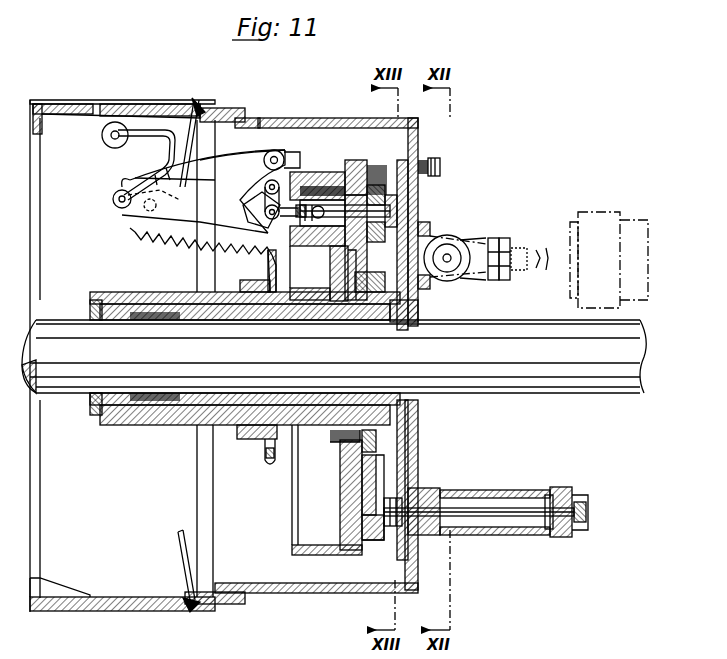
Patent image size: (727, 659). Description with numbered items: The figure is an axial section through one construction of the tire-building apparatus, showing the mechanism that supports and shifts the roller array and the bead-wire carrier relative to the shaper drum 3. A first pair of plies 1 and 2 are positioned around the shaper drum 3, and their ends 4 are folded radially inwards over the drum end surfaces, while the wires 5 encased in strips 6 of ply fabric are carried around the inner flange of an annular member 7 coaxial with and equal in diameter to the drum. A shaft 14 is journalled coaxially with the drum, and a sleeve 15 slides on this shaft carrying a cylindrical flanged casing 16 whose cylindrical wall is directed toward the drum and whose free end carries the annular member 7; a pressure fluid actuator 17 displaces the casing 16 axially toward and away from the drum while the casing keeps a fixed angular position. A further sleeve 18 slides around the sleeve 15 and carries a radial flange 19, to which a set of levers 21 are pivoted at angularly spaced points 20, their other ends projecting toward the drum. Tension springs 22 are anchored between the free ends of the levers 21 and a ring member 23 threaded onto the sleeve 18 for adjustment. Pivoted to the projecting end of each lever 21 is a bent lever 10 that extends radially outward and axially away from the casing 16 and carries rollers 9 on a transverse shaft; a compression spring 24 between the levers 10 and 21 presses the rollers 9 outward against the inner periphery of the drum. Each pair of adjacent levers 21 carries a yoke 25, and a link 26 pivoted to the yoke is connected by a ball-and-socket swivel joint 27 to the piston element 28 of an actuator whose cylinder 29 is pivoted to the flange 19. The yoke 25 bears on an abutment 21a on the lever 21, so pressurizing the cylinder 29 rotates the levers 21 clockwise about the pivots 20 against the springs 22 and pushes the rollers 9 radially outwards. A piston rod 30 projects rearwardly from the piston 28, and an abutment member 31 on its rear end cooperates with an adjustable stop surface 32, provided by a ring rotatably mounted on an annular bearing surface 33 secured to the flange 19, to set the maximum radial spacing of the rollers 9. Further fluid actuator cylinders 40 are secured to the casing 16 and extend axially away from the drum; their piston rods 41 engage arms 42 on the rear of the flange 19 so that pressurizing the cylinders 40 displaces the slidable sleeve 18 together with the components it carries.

The ply 1 is at (142, 100).
The ply 2 is at (165, 100).
The shaper drum 3 is at (115, 100).
The ply end 4 is at (200, 160).
The wire 5 is at (218, 108).
The strip of ply fabric 6 is at (196, 100).
The annular member 7 is at (245, 116).
The roller 9 is at (103, 140).
The bent lever 10 is at (172, 147).
The shaft 14 is at (60, 340).
The sleeve 15 is at (418, 306).
The cylindrical flanged casing 16 is at (410, 220).
The pressure fluid actuator 17 is at (606, 218).
The further sleeve 18 is at (302, 292).
The radial flange 19 is at (358, 160).
The pivot point 20 is at (274, 150).
The lever 21 is at (225, 180).
The abutment 21a is at (248, 210).
The tension spring 22 is at (183, 246).
The ring member 23 is at (264, 448).
The compression spring 24 is at (113, 206).
The yoke 25 is at (250, 250).
The link 26 is at (265, 203).
The ball-and-socket swivel joint 27 is at (320, 172).
The piston element 28 is at (322, 250).
The actuator cylinder 29 is at (380, 185).
The piston rod 30 is at (375, 205).
The abutment member 31 is at (418, 190).
The adjustable stop surface 32 is at (455, 235).
The annular bearing surface 33 is at (372, 452).
The fluid actuator cylinder 40 is at (498, 490).
The piston rod 41 is at (498, 520).
The arm 42 is at (380, 545).